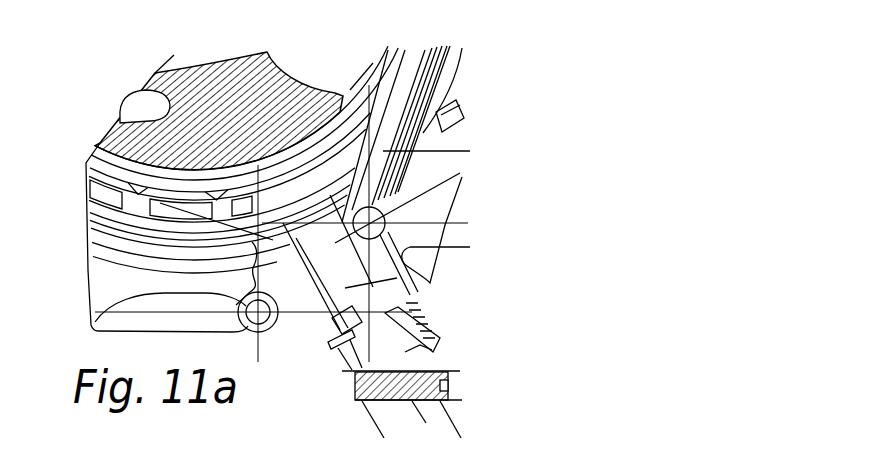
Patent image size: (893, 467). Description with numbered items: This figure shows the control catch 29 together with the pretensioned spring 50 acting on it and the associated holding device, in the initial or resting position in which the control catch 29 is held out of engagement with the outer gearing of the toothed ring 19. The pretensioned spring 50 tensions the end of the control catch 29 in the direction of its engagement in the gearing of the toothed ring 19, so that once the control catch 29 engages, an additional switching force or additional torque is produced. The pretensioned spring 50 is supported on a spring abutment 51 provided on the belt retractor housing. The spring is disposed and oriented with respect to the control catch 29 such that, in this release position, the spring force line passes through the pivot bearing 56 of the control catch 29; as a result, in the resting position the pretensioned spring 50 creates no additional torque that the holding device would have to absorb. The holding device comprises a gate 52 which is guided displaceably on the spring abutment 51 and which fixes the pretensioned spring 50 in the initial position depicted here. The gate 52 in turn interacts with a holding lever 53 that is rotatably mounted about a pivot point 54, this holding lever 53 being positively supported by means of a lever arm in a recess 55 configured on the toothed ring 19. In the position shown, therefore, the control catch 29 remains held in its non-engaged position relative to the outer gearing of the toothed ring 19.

The toothed ring 19 is at (400, 86).
The control catch 29 is at (470, 248).
The pretensioned spring 50 is at (427, 325).
The spring abutment 51 is at (413, 356).
The gate 52 is at (348, 327).
The holding lever 53 is at (115, 268).
The pivot point 54 is at (118, 306).
The recess 55 is at (100, 199).
The pivot bearing 56 is at (272, 231).